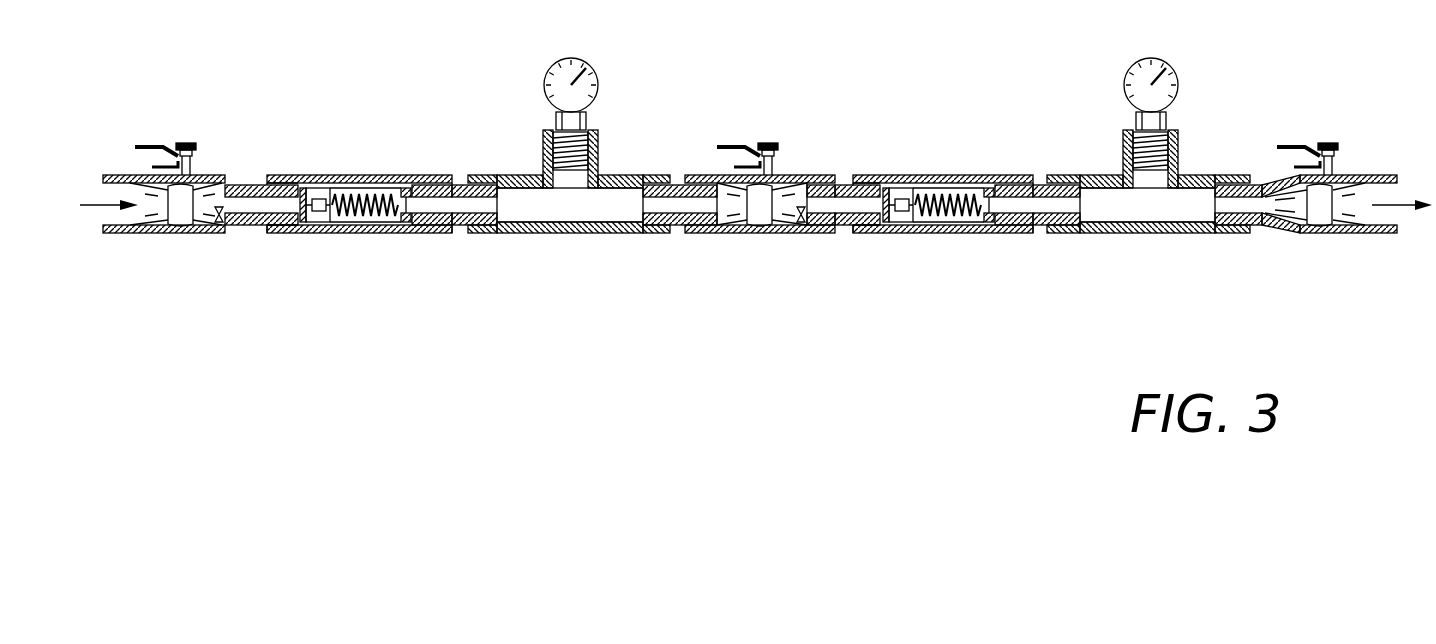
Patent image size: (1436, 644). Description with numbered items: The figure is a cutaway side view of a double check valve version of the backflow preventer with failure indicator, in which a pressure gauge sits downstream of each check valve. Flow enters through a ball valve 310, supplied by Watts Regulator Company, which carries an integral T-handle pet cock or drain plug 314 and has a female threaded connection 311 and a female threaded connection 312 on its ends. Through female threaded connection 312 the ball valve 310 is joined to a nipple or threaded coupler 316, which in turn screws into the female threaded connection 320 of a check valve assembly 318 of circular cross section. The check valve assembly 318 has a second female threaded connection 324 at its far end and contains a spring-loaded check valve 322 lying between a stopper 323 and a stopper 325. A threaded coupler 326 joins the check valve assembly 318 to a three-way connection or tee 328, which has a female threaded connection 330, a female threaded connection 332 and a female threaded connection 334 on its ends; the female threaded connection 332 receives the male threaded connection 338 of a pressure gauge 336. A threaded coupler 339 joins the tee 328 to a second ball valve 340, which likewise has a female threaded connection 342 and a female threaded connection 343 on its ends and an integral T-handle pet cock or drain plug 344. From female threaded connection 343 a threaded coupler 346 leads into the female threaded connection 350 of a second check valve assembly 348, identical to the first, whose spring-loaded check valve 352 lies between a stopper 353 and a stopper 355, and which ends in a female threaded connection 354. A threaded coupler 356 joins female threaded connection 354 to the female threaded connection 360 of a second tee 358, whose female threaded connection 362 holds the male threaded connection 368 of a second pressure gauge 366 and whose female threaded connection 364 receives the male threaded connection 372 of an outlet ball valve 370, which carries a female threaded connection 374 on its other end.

The ball valve 310 is at (152, 216).
The female threaded connection 311 is at (118, 177).
The female threaded connection 312 is at (225, 177).
The T-handle pet cock 314 is at (225, 233).
The threaded coupler 316 is at (262, 233).
The check valve assembly 318 is at (341, 197).
The female threaded connection 320 is at (278, 177).
The spring-loaded check valve 322 is at (348, 240).
The stopper 323 is at (312, 177).
The female threaded connection 324 is at (428, 177).
The stopper 325 is at (410, 177).
The threaded coupler 326 is at (450, 233).
The tee 328 is at (560, 178).
The female threaded connection 330 is at (470, 233).
The female threaded connection 332 is at (545, 145).
The female threaded connection 334 is at (660, 233).
The pressure gauge 336 is at (560, 55).
The male threaded connection 338 is at (568, 135).
The threaded coupler 339 is at (643, 204).
The ball valve 340 is at (779, 193).
The female threaded connection 342 is at (703, 177).
The female threaded connection 343 is at (815, 177).
The T-handle pet cock 344 is at (812, 233).
The threaded coupler 346 is at (843, 177).
The check valve assembly 348 is at (941, 195).
The female threaded connection 350 is at (868, 177).
The spring-loaded check valve 352 is at (930, 245).
The stopper 353 is at (895, 177).
The female threaded connection 354 is at (1015, 177).
The stopper 355 is at (985, 177).
The threaded coupler 356 is at (1043, 233).
The tee 358 is at (1165, 174).
The female threaded connection 360 is at (1068, 177).
The female threaded connection 362 is at (1120, 145).
The female threaded connection 364 is at (1232, 233).
The pressure gauge 366 is at (1180, 60).
The male threaded connection 368 is at (1140, 135).
The ball valve 370 is at (1347, 206).
The male threaded connection 372 is at (1240, 177).
The female threaded connection 374 is at (1385, 177).